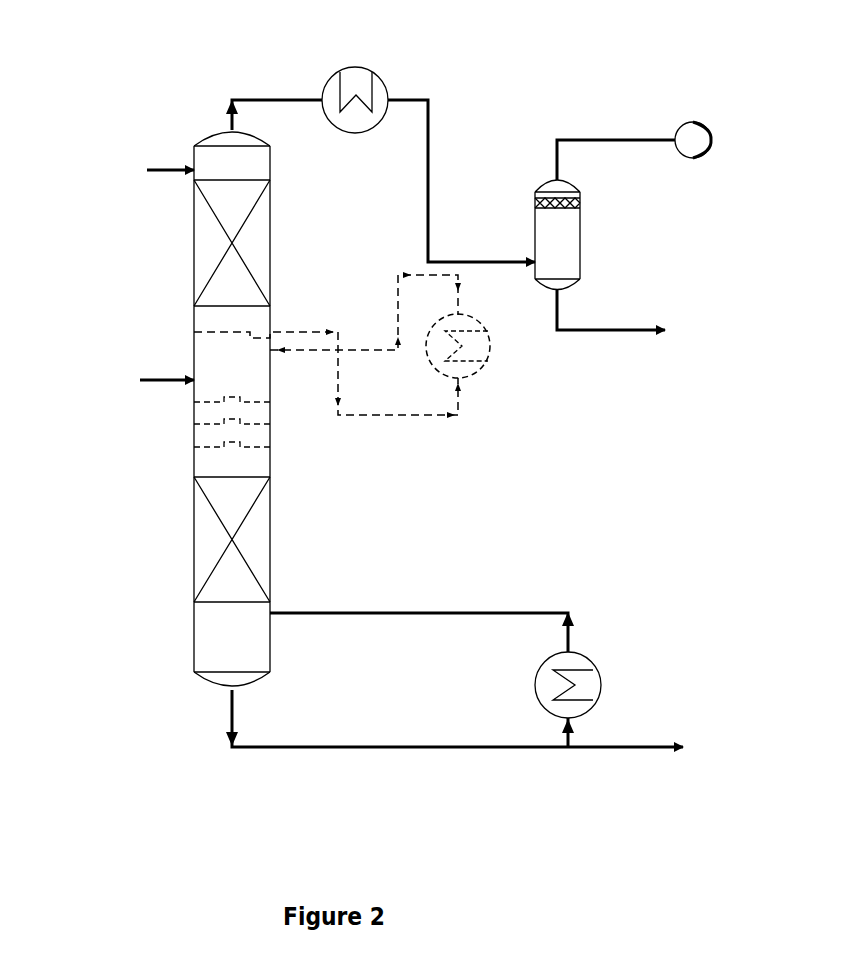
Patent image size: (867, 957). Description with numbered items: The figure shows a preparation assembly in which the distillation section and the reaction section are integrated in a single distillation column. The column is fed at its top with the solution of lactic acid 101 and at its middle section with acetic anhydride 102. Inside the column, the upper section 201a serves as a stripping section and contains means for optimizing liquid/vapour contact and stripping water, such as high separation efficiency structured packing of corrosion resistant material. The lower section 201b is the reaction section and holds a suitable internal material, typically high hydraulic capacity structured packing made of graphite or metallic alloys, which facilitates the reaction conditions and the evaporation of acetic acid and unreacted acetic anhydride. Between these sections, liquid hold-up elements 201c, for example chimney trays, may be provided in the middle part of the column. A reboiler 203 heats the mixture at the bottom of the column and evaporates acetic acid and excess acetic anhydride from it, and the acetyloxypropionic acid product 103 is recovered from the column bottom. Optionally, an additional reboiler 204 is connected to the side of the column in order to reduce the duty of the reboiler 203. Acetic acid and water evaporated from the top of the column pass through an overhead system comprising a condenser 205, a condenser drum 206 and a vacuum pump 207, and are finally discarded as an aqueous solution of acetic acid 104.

The solution of lactic acid 101 is at (62, 150).
The acetic anhydride 102 is at (55, 361).
The (S)-2-acetyloxypropionic acid 103 is at (683, 727).
The aqueous solution of acetic acid 104 is at (665, 311).
The upper section (stripping section) 201a is at (205, 268).
The lower section (reaction section) 201b is at (205, 527).
The liquid hold-up elements 201c is at (252, 433).
The reboiler 203 is at (578, 655).
The additional reboiler 204 is at (270, 218).
The condenser 205 is at (352, 66).
The condenser drum 206 is at (563, 262).
The vacuum pump 207 is at (685, 125).